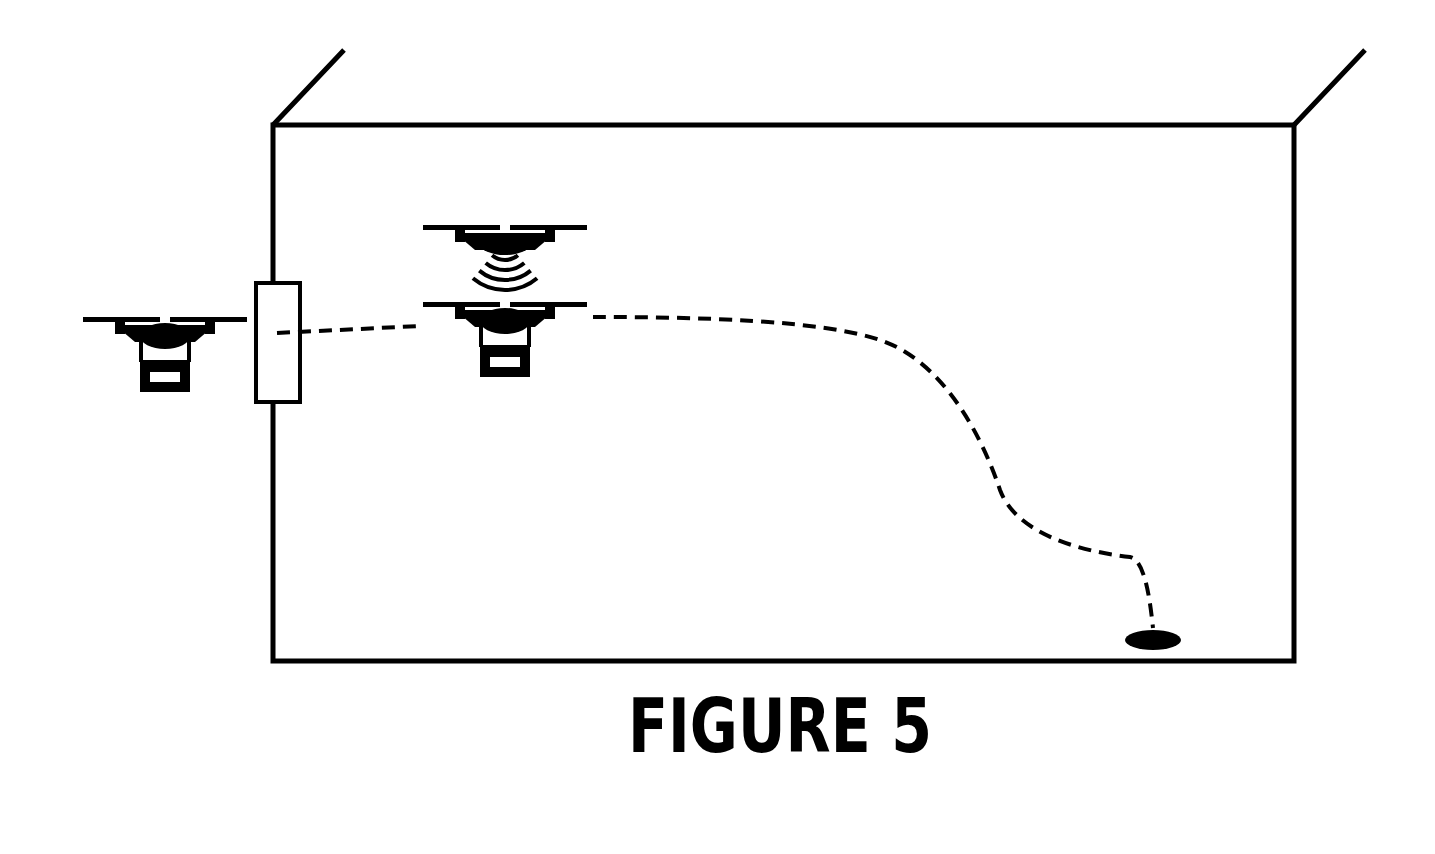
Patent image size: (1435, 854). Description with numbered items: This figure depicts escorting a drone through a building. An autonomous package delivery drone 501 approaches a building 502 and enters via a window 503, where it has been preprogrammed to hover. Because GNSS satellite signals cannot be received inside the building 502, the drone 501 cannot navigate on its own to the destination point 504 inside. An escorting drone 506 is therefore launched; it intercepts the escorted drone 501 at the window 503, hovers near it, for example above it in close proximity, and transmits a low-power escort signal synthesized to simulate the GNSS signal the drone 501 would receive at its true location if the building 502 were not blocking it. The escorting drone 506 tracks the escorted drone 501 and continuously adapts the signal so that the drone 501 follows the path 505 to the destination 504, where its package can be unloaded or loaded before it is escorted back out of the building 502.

The drone 501 is at (153, 415).
The building 502 is at (1325, 240).
The window 503 is at (340, 375).
The destination 504 is at (1188, 600).
The path 505 is at (980, 487).
The escort drone 506 is at (540, 202).